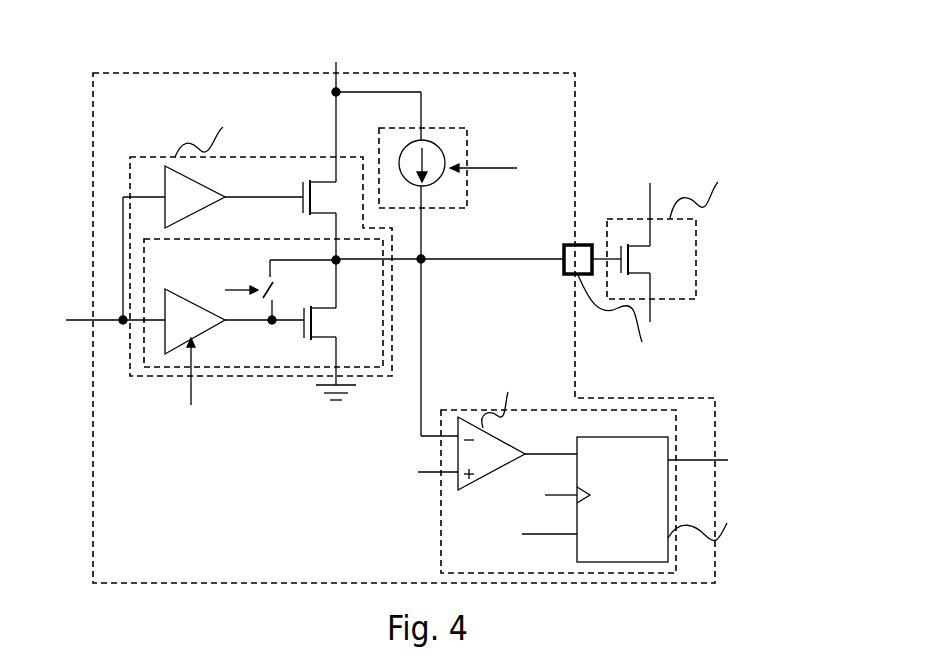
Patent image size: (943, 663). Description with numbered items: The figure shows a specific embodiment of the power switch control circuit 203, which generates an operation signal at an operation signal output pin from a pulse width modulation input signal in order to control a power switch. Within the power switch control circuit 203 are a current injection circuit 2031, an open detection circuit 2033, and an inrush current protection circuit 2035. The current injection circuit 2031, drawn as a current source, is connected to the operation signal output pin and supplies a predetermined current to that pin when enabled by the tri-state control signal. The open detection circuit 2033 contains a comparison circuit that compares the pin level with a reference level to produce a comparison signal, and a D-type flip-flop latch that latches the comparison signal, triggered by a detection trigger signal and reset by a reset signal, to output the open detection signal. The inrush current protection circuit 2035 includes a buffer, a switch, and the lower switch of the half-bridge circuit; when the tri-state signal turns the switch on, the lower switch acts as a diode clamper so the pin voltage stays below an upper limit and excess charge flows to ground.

The power switch control circuit 203 is at (136, 103).
The current injection circuit 2031 is at (467, 138).
The open detection circuit 2033 is at (490, 568).
The inrush current protection circuit 2035 is at (378, 363).